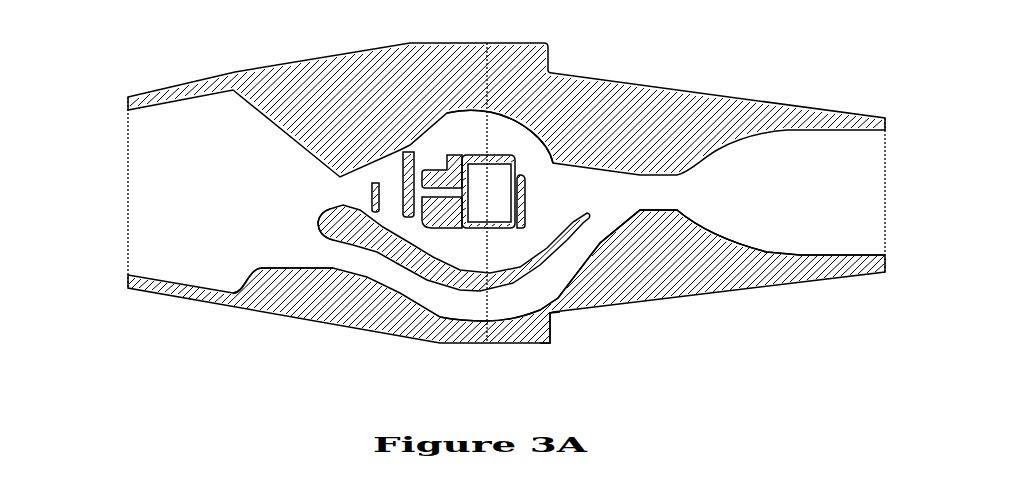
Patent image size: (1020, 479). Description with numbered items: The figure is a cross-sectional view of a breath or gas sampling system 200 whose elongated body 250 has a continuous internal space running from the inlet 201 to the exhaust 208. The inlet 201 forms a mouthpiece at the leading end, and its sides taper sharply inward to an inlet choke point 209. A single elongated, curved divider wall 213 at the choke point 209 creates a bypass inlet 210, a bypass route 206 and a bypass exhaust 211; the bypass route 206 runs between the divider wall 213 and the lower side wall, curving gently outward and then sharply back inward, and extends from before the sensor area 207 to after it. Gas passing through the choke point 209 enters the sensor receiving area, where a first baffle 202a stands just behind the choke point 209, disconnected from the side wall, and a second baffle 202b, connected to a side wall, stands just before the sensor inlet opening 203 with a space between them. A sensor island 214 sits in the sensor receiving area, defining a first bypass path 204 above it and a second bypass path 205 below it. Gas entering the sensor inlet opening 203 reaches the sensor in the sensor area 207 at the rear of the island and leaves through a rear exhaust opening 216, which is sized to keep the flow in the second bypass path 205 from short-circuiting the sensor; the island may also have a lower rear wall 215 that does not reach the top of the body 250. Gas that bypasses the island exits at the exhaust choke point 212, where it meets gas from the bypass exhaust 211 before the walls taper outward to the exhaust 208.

The breadth sampling system 200 is at (99, 58).
The inlet 201 is at (104, 162).
The first baffle 202a is at (373, 184).
The second baffle 202b is at (404, 184).
The sensor inlet opening 203 is at (475, 184).
The first bypass path 204 is at (507, 143).
The second bypass path 205 is at (462, 258).
The bypass route 206 is at (453, 305).
The sensor area 207 is at (470, 228).
The exhaust 208 is at (898, 181).
The inlet choke point 209 is at (320, 203).
The bypass inlet 210 is at (290, 258).
The bypass exhaust 211 is at (607, 222).
The exhaust choke point 212 is at (692, 195).
The divider wall 213 is at (550, 342).
The sensor island 214 is at (447, 158).
The rear wall 215 is at (526, 196).
The rear exhaust opening 216 is at (528, 161).
The body 250 is at (810, 105).